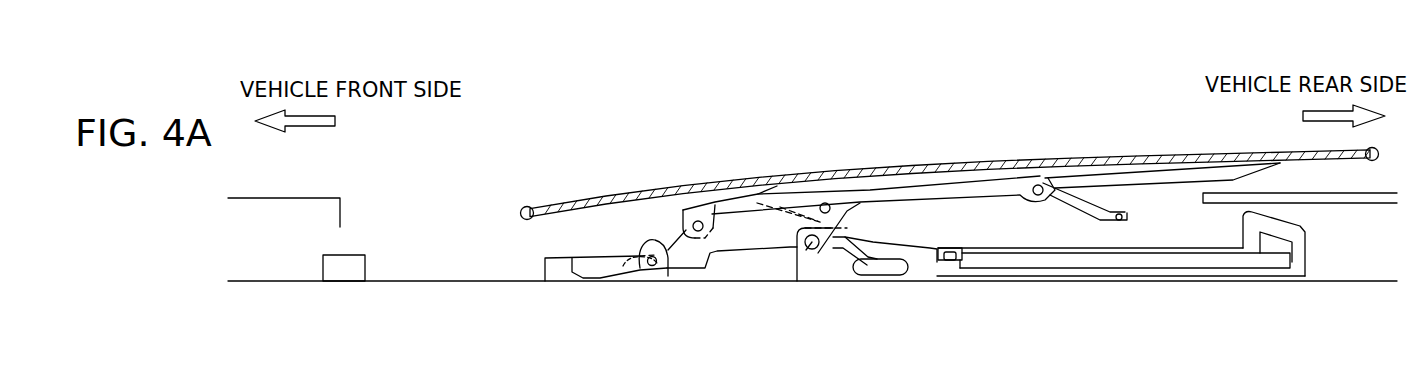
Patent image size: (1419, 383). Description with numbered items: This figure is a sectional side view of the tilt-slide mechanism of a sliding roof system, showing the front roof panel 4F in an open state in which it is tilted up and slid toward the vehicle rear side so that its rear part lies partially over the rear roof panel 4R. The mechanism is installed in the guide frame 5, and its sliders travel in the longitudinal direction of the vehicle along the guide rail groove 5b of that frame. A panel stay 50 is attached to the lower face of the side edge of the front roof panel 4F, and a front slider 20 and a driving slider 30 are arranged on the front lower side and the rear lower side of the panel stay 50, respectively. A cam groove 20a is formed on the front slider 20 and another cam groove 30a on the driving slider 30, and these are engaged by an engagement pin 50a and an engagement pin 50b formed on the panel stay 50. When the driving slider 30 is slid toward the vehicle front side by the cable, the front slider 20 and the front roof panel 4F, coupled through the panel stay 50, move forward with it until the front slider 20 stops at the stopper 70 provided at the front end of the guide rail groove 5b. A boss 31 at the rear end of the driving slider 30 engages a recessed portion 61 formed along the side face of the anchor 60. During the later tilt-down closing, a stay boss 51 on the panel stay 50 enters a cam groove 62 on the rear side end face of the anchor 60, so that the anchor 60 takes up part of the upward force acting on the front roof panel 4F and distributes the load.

The front roof panel 4F is at (840, 172).
The rear roof panel 4R is at (1297, 197).
The guide frame 5 is at (1351, 280).
The guide rail groove 5b is at (1182, 267).
The front slider 20 is at (556, 272).
The cam groove 20a is at (624, 264).
The driving slider 30 is at (926, 268).
The cam groove 30a is at (869, 276).
The boss 31 is at (951, 254).
The panel stay 50 is at (1090, 222).
The engagement pin 50a is at (657, 266).
The engagement pin 50b is at (815, 250).
The stay boss 51 is at (1123, 215).
The anchor 60 is at (1320, 258).
The recessed portion 61 is at (1116, 258).
The cam groove 62 is at (1278, 240).
The stopper 70 is at (356, 259).